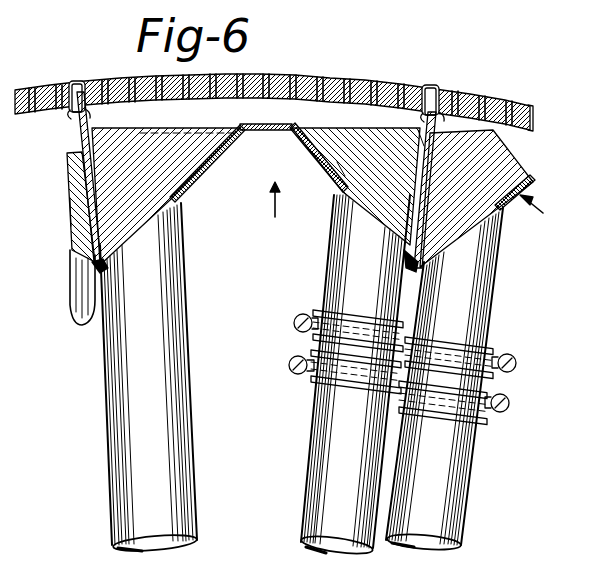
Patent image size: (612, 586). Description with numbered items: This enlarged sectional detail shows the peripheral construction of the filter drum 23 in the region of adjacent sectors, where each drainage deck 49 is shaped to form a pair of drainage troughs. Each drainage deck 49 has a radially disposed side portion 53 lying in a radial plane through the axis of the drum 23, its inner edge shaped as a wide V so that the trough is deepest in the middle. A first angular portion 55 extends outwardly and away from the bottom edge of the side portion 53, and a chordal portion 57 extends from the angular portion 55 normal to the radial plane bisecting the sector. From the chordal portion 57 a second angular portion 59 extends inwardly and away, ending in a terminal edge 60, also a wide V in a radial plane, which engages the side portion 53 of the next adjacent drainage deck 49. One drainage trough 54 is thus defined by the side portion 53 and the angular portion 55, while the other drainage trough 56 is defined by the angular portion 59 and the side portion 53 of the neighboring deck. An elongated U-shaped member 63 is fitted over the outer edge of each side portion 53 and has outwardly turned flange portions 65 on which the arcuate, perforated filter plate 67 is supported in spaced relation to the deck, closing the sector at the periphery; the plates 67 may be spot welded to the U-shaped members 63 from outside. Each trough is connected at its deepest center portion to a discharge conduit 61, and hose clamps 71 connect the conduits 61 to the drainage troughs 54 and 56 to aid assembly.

The drum 23 is at (531, 124).
The drainage deck 49 is at (416, 207).
The side portion 53 is at (85, 132).
The drainage trough 54 is at (129, 172).
The first angular portion 55 is at (165, 176).
The drainage trough 56 is at (62, 172).
The chordal portion 57 is at (182, 127).
The second angular portion 59 is at (70, 212).
The terminal edge 60 is at (92, 326).
The conduit 61 is at (338, 277).
The U-shaped member 63 is at (76, 83).
The flange portion 65 is at (72, 109).
The perforated filter plate 67 is at (36, 93).
The hose clamp 71 is at (316, 386).